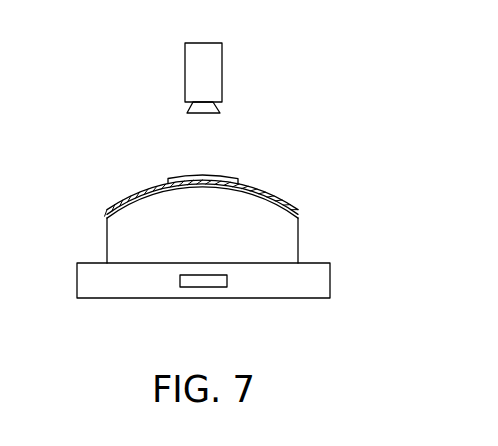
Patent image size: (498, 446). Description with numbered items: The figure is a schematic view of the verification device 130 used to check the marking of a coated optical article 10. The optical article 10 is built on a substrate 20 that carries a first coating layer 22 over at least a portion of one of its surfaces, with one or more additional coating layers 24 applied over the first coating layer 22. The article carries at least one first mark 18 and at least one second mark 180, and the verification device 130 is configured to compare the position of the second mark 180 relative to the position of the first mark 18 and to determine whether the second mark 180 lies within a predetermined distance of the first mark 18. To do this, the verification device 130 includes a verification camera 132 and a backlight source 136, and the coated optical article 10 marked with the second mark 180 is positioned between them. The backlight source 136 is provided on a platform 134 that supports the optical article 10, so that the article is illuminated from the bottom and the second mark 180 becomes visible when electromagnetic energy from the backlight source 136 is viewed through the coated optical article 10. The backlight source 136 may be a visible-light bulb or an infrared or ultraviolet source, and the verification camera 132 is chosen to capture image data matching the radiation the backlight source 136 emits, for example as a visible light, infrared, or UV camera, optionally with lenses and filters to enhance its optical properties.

The verification device 130 is at (386, 53).
The verification camera 132 is at (222, 75).
The optical article 10 is at (93, 181).
The first mark 18 is at (148, 195).
The second mark 180 is at (186, 181).
The additional coating layer 24 is at (290, 204).
The first coating layer 22 is at (299, 229).
The substrate 20 is at (107, 241).
The platform 134 is at (330, 281).
The backlight source 136 is at (208, 287).